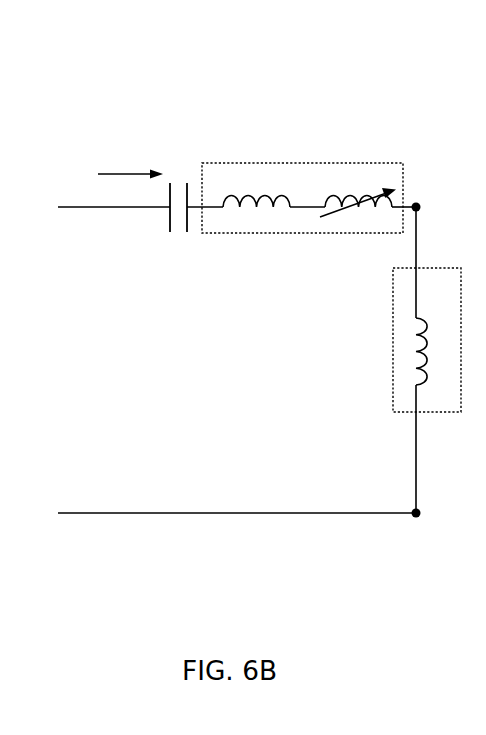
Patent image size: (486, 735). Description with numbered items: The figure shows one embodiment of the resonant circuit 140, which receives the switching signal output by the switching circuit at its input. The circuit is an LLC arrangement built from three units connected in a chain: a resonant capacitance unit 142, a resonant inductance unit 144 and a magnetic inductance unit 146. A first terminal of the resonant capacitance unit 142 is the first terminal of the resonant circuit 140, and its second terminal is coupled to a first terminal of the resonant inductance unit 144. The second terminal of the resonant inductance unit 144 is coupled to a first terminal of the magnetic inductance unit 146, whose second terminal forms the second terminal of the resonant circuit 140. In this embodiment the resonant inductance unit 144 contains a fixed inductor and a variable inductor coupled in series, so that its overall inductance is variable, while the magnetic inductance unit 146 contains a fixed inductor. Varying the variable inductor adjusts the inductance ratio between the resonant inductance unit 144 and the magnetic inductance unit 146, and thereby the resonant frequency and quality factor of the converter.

The resonant circuit 140 is at (48, 34).
The resonant capacitance unit 142 is at (170, 233).
The resonant inductance unit 144 is at (322, 235).
The magnetic inductance unit 146 is at (389, 403).